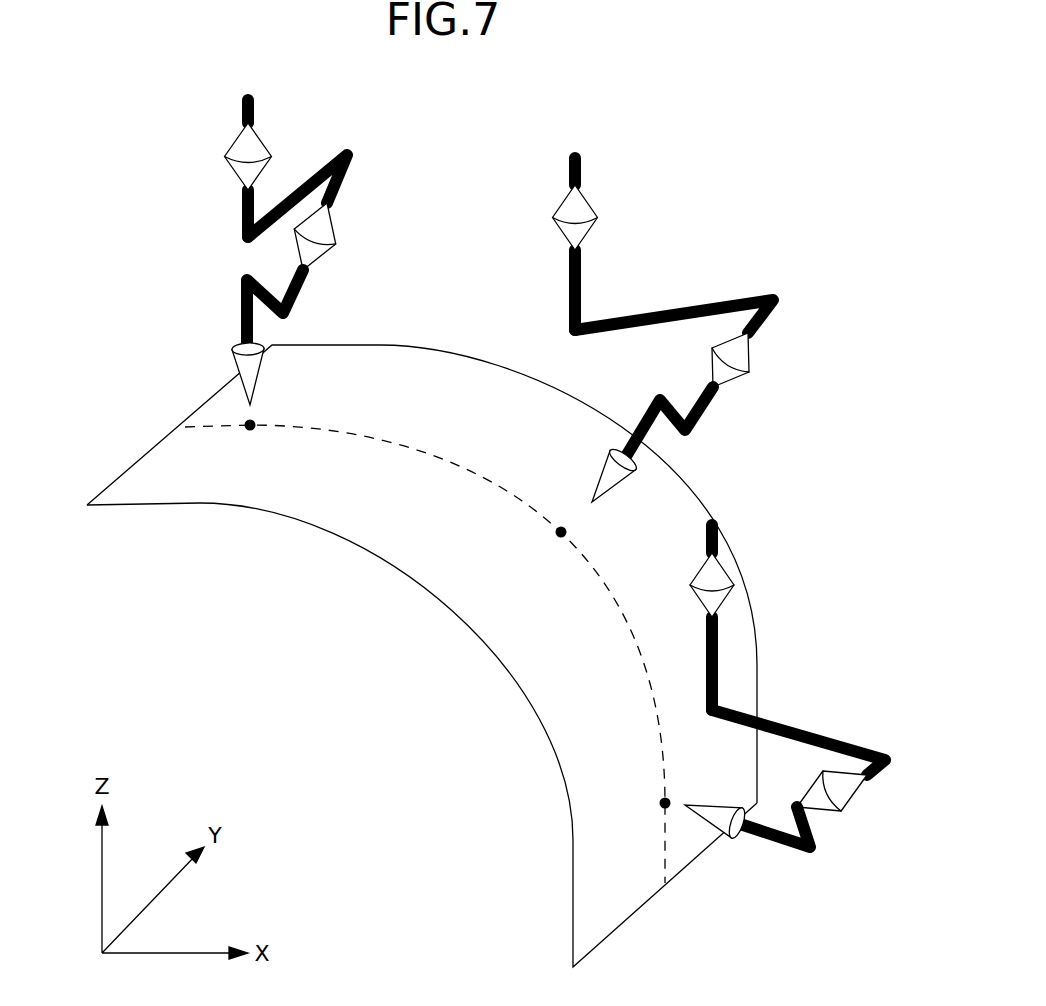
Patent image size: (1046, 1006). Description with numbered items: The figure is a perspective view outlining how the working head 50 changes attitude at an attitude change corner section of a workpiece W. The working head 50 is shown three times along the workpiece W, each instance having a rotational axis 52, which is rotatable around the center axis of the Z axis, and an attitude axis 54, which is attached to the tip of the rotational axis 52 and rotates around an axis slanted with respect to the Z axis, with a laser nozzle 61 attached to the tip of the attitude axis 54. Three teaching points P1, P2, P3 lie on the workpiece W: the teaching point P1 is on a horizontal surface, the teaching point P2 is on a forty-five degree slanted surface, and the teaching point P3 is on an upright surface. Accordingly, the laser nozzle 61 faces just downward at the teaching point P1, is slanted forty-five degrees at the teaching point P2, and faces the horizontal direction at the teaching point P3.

The working head 50 is at (311, 164).
The rotational axis 52 is at (243, 212).
The attitude axis 54 is at (297, 297).
The laser nozzle 61 is at (243, 367).
The workpiece W is at (370, 528).
The teaching point P1 is at (252, 431).
The teaching point P2 is at (557, 537).
The teaching point P3 is at (660, 805).